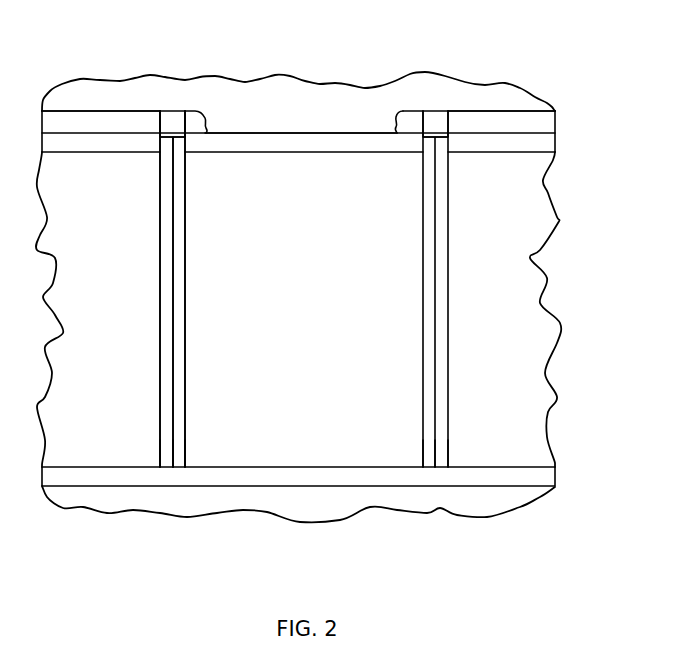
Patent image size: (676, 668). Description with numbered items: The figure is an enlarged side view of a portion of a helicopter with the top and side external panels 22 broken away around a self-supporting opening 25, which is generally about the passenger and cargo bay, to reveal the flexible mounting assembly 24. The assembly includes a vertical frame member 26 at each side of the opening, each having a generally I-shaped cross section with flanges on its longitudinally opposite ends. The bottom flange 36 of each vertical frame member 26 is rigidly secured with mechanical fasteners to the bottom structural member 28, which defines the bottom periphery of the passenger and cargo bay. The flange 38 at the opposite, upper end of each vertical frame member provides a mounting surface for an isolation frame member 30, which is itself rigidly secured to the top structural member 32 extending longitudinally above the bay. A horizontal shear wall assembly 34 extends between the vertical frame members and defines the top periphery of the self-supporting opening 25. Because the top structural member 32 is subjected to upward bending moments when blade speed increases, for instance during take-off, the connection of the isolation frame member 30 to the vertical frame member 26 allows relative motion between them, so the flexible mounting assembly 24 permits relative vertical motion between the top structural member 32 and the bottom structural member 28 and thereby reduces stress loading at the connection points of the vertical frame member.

The external panels 22 is at (584, 285).
The flexible mounting assembly 24 is at (156, 157).
The self-supporting opening 25 is at (315, 140).
The vertical frame member 26 is at (187, 448).
The bottom structural member 28 is at (270, 487).
The isolation frame member 30 is at (441, 111).
The top structural member 32 is at (480, 113).
The horizontal shear wall assembly 34 is at (150, 123).
The bottom flange 36 is at (157, 466).
The flange 38 is at (187, 138).